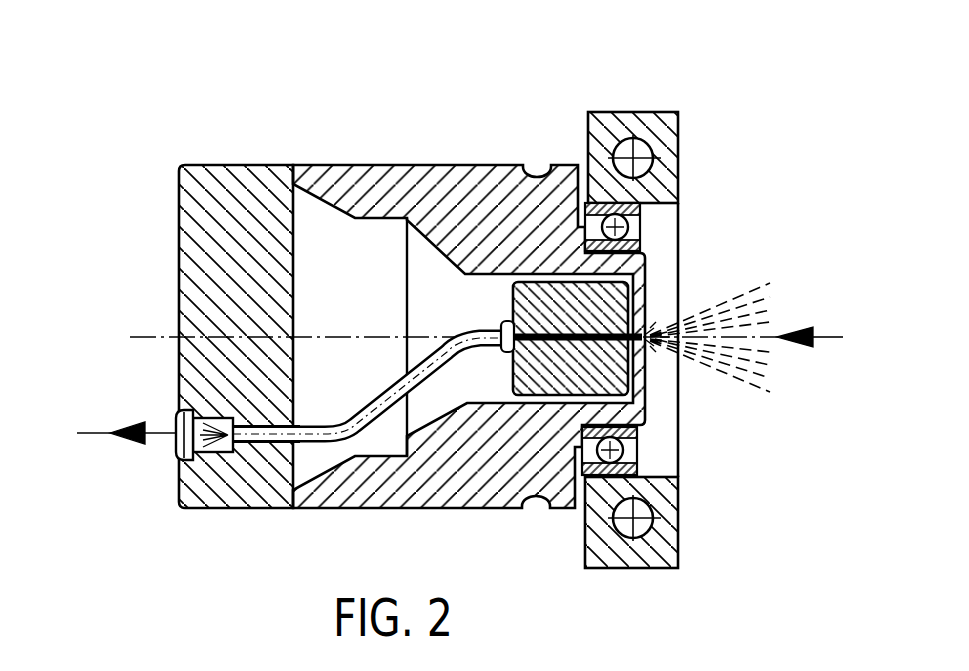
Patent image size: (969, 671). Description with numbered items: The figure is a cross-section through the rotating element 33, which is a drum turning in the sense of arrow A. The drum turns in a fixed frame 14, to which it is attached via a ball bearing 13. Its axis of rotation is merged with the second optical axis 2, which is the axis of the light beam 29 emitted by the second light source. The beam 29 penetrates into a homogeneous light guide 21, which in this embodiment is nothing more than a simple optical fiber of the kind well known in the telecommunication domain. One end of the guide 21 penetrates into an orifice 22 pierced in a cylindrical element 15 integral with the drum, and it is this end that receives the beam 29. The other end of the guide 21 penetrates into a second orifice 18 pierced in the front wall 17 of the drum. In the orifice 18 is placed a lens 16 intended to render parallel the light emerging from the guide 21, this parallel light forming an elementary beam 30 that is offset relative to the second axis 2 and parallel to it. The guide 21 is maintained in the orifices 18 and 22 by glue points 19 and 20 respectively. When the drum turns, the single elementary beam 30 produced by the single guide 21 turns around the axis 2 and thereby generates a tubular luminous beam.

The second optical axis 2 is at (823, 336).
The ball bearing 13 is at (640, 443).
The fixed frame 14 is at (642, 120).
The cylindrical element 15 is at (535, 297).
The lens 16 is at (175, 428).
The front wall 17 is at (203, 492).
The second orifice 18 is at (245, 448).
The glue point 19 is at (300, 448).
The glue point 20 is at (502, 320).
The homogeneous light guide 21 is at (387, 390).
The orifice 22 is at (526, 372).
The light beam 29 is at (745, 388).
The elementary beam 30 is at (102, 433).
The rotating element 33 is at (350, 150).
The arrow A is at (380, 165).